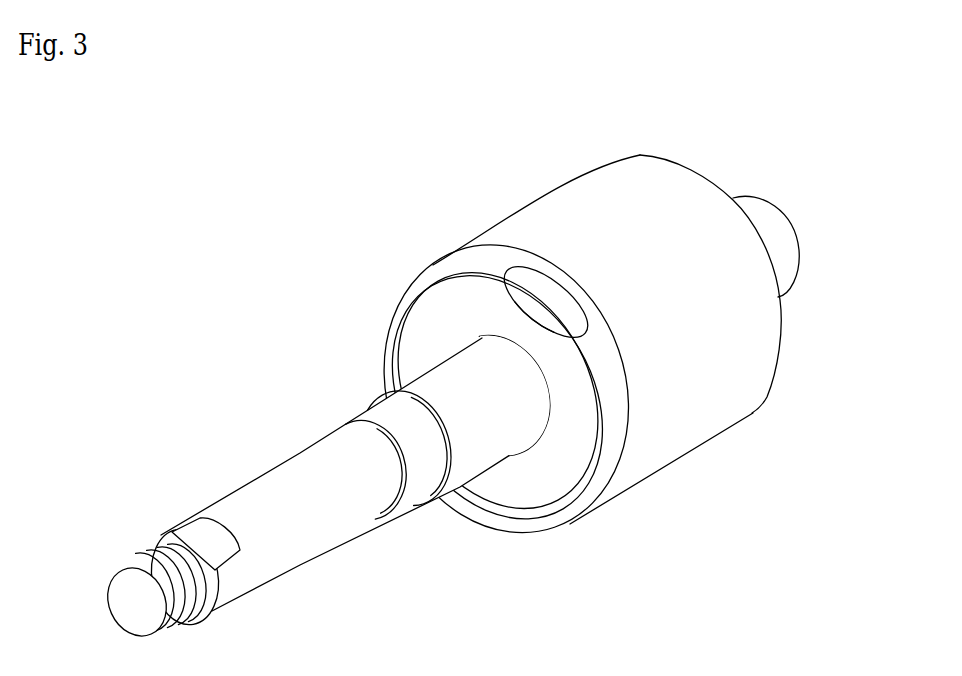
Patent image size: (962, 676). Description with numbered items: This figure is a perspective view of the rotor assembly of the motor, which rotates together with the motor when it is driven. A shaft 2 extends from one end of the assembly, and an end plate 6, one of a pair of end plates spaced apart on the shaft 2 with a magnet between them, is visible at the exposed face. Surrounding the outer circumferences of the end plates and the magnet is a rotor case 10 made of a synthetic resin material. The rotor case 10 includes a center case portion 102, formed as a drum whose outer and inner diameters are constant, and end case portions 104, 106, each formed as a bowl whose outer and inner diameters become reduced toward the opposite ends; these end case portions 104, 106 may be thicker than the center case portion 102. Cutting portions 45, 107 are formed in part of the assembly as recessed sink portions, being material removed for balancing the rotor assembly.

The shaft 2 is at (347, 497).
The end plate 6 is at (537, 480).
The rotor case 10 is at (753, 412).
The cutting portion 45 is at (522, 308).
The center case portion 102 is at (668, 420).
The end case portion 104 is at (782, 342).
The end case portion 106 is at (593, 487).
The cutting portion 107 is at (525, 268).